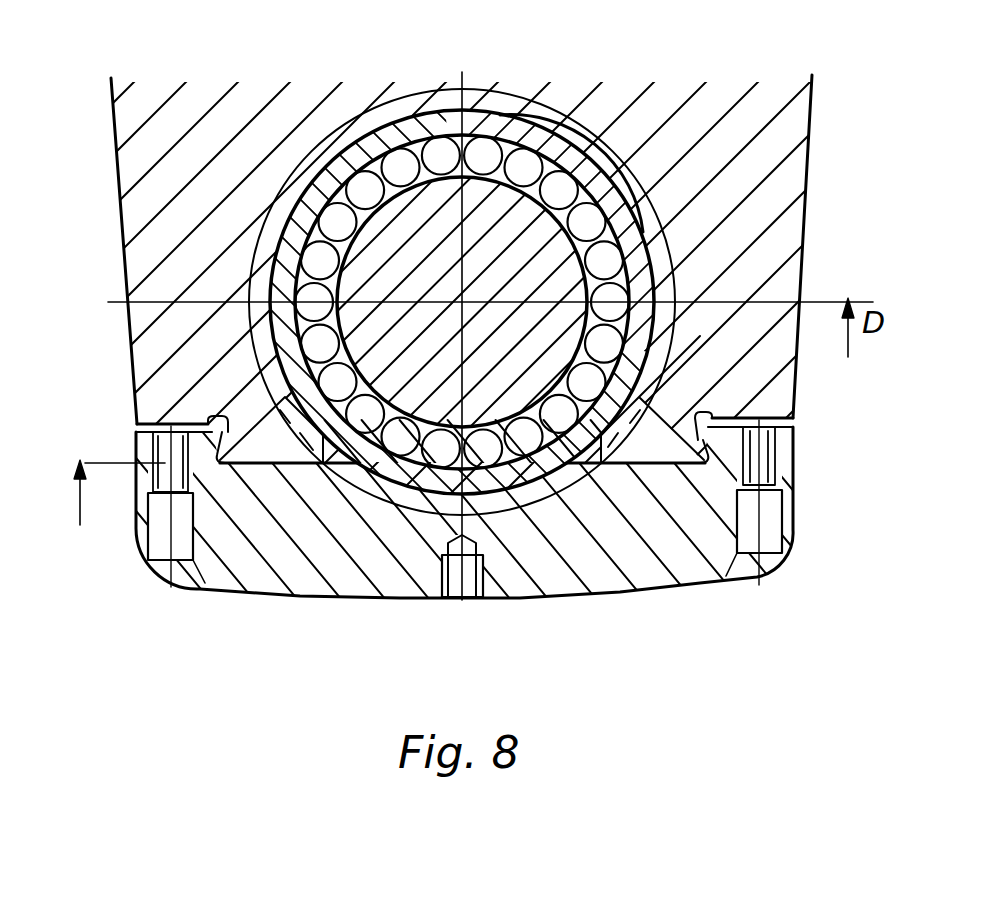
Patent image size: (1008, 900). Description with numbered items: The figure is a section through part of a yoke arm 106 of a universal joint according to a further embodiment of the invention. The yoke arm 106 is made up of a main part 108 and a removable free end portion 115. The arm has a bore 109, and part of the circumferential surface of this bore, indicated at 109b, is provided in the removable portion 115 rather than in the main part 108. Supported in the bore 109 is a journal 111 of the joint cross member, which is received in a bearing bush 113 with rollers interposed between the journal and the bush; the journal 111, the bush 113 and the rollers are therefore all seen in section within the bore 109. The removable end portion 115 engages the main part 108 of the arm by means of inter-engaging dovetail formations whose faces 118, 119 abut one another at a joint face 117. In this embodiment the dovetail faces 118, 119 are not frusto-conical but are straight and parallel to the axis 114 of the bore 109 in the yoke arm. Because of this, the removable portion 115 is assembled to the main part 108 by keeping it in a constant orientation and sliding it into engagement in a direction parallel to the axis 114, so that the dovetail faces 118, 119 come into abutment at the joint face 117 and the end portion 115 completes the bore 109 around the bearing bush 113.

The yoke arm 106 is at (817, 262).
The main part 108 is at (778, 388).
The bore 109 is at (308, 202).
The part of the circumferential surface of the bore 109b is at (425, 468).
The journal 111 is at (523, 259).
The bearing bush 113 is at (635, 246).
The axis 114 is at (457, 298).
The removable free end portion 115 is at (291, 557).
The joint face 117 is at (198, 424).
The dovetail face 118 is at (690, 455).
The dovetail face 119 is at (733, 413).